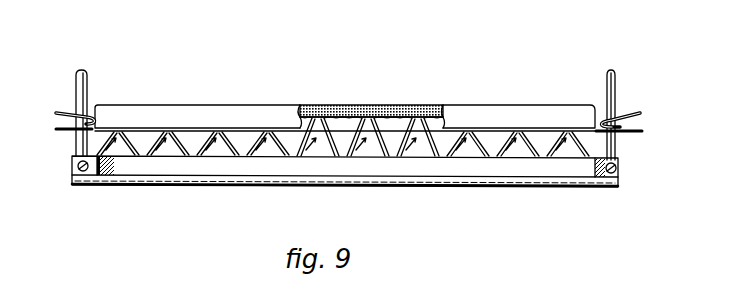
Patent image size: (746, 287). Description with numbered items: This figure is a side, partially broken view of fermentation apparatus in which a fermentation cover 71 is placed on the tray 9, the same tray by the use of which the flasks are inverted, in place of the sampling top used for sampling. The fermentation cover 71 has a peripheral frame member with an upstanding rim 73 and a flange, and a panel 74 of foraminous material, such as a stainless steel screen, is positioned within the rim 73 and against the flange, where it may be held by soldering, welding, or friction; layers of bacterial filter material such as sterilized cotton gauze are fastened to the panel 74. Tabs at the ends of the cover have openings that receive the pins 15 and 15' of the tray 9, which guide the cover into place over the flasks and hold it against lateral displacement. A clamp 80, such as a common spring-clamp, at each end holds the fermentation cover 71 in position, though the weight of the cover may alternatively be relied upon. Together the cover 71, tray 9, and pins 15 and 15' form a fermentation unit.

The tray 9 is at (620, 153).
The pin 15 is at (634, 107).
The pin 15' is at (99, 89).
The fermentation cover 71 is at (466, 97).
The upstanding rim 73 is at (95, 111).
The panel of foraminous material 74 is at (311, 106).
The clamp 80 is at (641, 113).